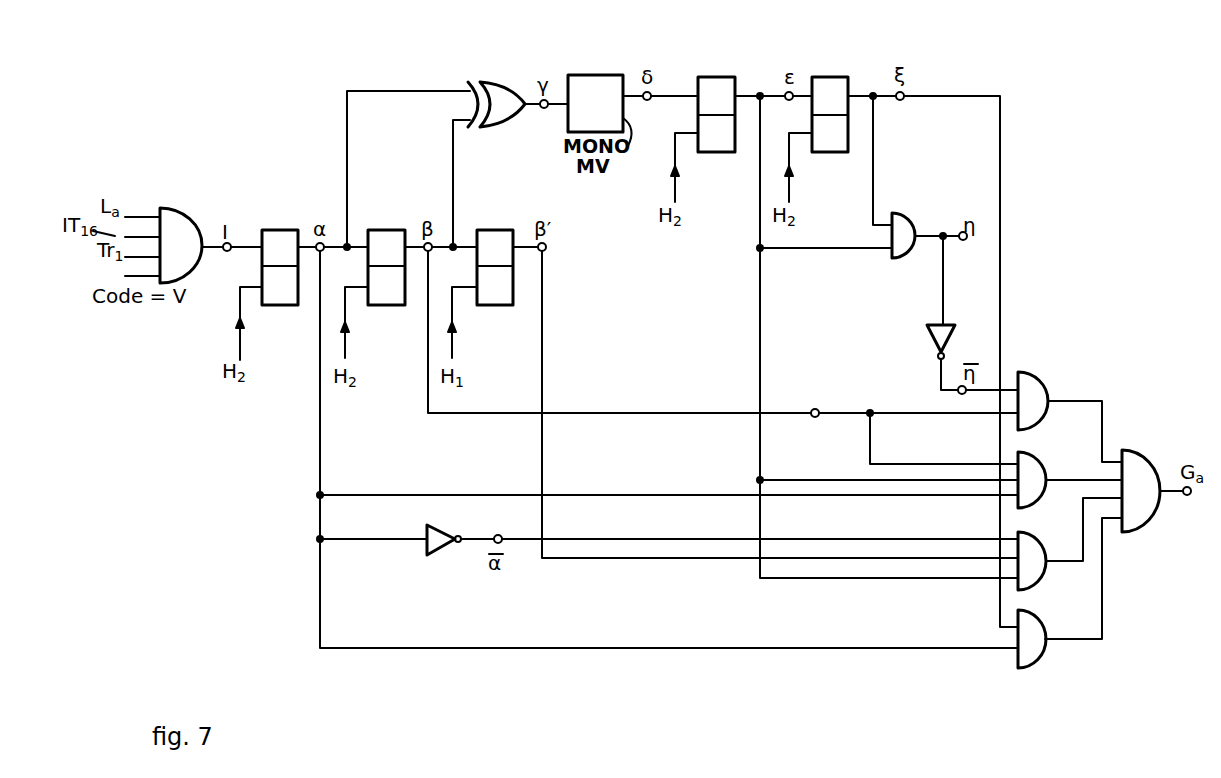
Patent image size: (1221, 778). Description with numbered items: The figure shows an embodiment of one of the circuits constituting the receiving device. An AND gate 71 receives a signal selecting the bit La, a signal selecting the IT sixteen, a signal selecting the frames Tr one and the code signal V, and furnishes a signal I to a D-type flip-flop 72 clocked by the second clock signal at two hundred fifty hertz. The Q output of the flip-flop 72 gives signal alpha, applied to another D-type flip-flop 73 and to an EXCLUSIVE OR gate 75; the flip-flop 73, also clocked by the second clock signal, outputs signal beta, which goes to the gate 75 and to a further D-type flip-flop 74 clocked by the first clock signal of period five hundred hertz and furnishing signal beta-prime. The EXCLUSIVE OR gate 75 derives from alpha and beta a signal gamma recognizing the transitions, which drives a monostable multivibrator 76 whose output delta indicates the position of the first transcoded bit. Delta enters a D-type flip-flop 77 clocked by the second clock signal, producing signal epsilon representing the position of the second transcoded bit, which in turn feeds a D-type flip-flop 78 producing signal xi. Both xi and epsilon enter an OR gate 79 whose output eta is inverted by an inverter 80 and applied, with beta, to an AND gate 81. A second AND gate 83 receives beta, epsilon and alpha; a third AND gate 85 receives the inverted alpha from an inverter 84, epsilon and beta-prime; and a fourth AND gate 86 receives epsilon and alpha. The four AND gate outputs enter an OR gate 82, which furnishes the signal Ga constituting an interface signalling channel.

The AND gate 71 is at (177, 228).
The D-type flip-flop 72 is at (282, 235).
The D-type flip-flop 73 is at (392, 237).
The D-type flip-flop 74 is at (500, 240).
The EXCLUSIVE OR gate 75 is at (498, 96).
The monostable multivibrator 76 is at (597, 82).
The D-type flip-flop 77 is at (720, 82).
The D-type flip-flop 78 is at (833, 82).
The OR gate 79 is at (901, 218).
The inverter 80 is at (928, 332).
The AND gate 81 is at (1040, 386).
The OR gate 82 is at (1135, 518).
The second AND gate 83 is at (1030, 462).
The inverter 84 is at (427, 548).
The third AND gate 85 is at (1035, 541).
The fourth AND gate 86 is at (1030, 660).